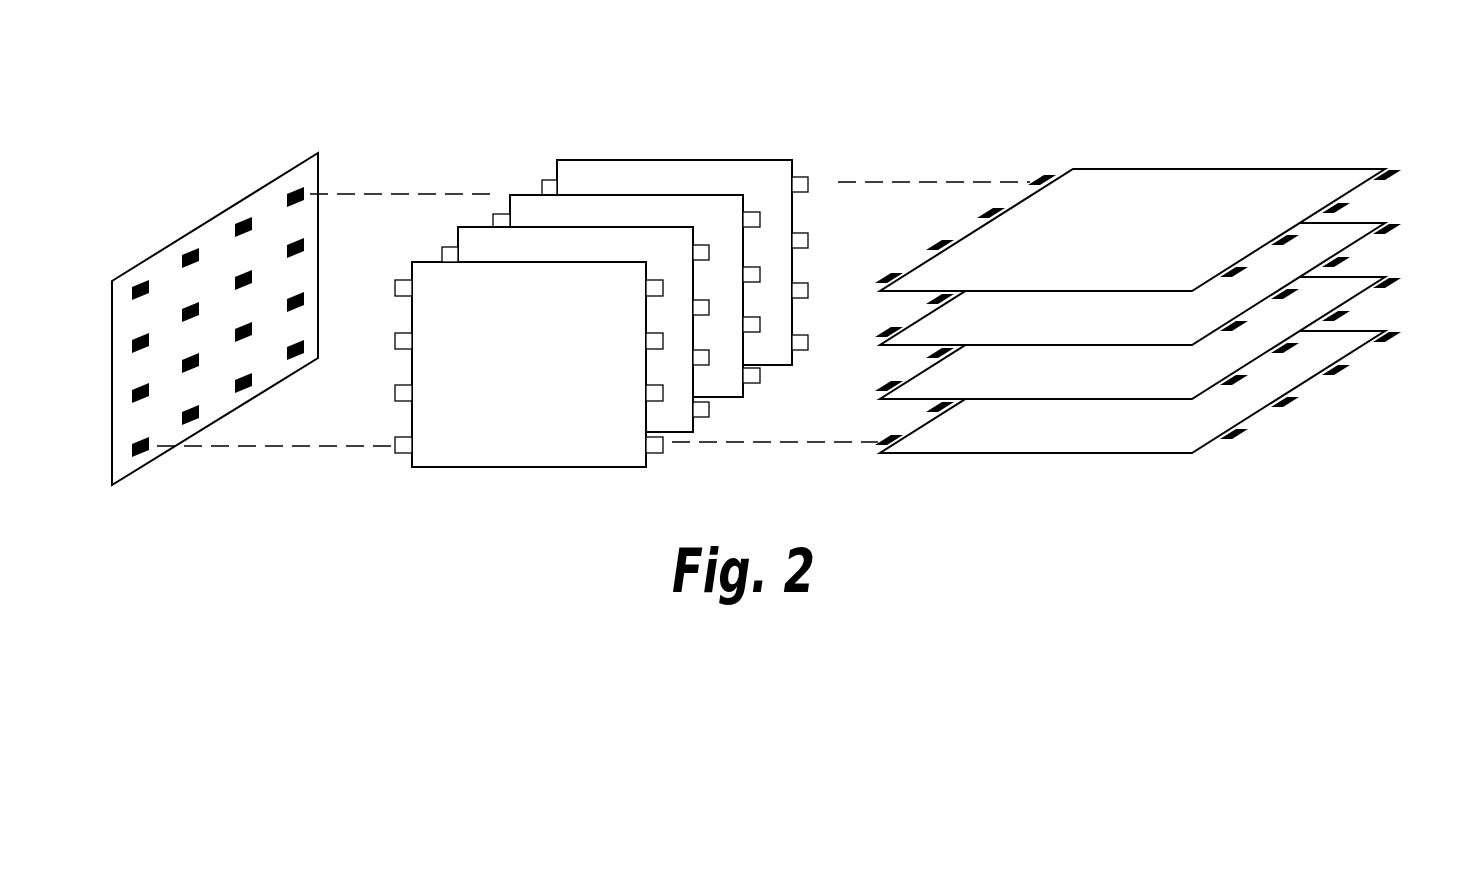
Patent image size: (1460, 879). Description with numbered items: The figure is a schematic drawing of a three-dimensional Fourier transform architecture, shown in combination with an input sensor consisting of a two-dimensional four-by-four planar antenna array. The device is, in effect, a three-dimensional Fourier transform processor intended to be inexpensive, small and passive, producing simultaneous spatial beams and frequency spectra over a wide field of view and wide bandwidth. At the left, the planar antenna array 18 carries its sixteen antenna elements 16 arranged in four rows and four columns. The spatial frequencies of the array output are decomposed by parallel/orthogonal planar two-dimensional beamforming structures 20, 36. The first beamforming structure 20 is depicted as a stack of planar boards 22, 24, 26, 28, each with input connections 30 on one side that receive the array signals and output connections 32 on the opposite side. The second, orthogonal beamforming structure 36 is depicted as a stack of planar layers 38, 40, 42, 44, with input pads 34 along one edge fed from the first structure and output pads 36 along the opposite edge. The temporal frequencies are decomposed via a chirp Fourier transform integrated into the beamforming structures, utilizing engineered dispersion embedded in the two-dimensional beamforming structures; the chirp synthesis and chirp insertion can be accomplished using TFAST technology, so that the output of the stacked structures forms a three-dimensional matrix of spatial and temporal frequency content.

The detector elements 16 is at (298, 192).
The detector array panel 18 is at (320, 156).
The planar 2-D beamforming structure 20 is at (702, 92).
The first circuit board 22 is at (538, 372).
The second circuit board 24 is at (681, 266).
The third circuit board 26 is at (600, 205).
The fourth circuit board 28 is at (703, 176).
The input connectors 30 is at (395, 343).
The output connectors 32 is at (808, 236).
The input contact pads 34 is at (885, 438).
The planar 2-D beamforming structure 36 is at (1333, 211).
The first layer 38 is at (1098, 436).
The second layer 40 is at (1098, 383).
The third layer 42 is at (1098, 329).
The fourth layer 44 is at (1098, 275).